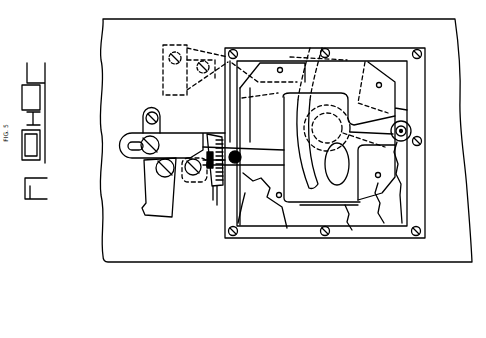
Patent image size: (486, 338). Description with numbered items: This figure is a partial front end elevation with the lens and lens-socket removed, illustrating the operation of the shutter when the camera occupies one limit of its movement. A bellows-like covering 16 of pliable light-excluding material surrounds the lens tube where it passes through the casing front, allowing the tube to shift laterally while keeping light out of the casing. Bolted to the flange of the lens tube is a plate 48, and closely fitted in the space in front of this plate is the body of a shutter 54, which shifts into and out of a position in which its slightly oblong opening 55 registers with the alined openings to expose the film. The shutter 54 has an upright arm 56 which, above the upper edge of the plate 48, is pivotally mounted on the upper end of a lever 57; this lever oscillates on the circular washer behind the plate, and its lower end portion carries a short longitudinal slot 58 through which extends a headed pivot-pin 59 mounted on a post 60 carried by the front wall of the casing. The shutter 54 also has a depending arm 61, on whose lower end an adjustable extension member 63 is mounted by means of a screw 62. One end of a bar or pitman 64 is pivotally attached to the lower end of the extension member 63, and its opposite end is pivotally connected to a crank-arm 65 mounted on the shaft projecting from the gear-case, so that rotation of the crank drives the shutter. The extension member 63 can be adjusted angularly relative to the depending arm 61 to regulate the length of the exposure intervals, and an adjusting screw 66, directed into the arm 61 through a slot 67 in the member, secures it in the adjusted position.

The bellows-like covering 16 is at (367, 217).
The plate 48 is at (287, 202).
The shutter 54 is at (307, 193).
The oblong opening 55 is at (337, 180).
The upright arm 56 is at (406, 140).
The lever 57 is at (185, 133).
The longitudinal slot 58 is at (120, 143).
The headed pivot-pin 59 is at (146, 157).
The post 60 is at (144, 124).
The depending arm 61 is at (201, 74).
The screw 62 is at (193, 176).
The adjustable extension member 63 is at (190, 183).
The bar or pitman 64 is at (139, 200).
The crank-arm 65 is at (218, 195).
The adjusting screw 66 is at (211, 187).
The slot 67 is at (222, 133).